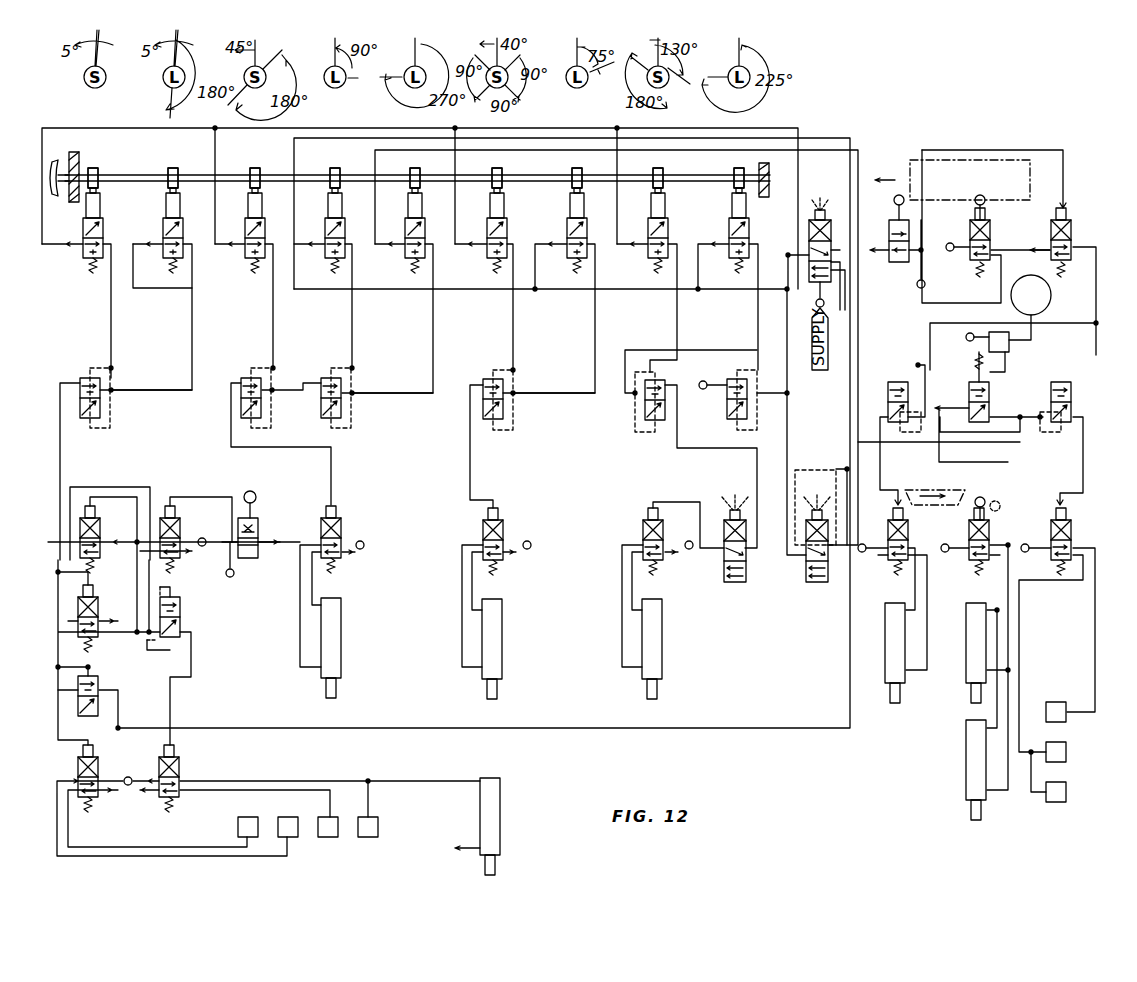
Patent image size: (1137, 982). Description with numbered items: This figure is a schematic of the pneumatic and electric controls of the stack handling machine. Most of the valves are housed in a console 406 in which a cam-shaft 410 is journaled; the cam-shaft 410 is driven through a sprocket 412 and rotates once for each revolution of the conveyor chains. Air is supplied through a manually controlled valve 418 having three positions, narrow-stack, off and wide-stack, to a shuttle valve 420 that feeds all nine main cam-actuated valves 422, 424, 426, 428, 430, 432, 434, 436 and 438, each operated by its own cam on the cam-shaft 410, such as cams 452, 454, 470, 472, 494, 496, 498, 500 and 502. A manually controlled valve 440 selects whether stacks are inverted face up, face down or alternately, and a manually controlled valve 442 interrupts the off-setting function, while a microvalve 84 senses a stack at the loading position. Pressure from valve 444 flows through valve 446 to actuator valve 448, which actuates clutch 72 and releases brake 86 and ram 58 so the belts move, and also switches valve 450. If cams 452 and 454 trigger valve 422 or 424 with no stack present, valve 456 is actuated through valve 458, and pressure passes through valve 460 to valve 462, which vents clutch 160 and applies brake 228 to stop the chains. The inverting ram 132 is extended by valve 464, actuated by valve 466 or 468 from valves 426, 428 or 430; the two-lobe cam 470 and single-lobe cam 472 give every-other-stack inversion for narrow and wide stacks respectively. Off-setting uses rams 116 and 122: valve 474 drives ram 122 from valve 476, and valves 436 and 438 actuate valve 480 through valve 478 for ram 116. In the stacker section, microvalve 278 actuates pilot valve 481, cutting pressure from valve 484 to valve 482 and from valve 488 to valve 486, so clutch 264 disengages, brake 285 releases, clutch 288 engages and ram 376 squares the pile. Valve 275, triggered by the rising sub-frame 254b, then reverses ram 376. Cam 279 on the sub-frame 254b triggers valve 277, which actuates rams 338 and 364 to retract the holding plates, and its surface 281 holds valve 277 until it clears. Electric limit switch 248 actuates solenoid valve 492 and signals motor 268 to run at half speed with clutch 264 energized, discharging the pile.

The cam-shaft 410 is at (100, 182).
The sprocket 412 is at (52, 164).
The console 406 is at (78, 158).
The main cam-actuated valve 422 is at (83, 258).
The main cam-actuated valve 424 is at (177, 256).
The main cam-actuated valve 426 is at (247, 258).
The main cam-actuated valve 428 is at (329, 258).
The main cam-actuated valve 430 is at (408, 260).
The main cam-actuated valve 432 is at (490, 260).
The main cam-actuated valve 434 is at (574, 262).
The main cam-actuated valve 436 is at (653, 260).
The main cam-actuated valve 438 is at (748, 260).
The cam 452 is at (95, 168).
The cam 454 is at (172, 168).
The cam 470 is at (255, 168).
The cam 472 is at (335, 168).
The cam 494 is at (415, 168).
The cam 496 is at (497, 168).
The cam 498 is at (577, 168).
The cam 500 is at (658, 168).
The cam 502 is at (739, 168).
The manually controlled valve 418 is at (816, 281).
The valve 458 is at (86, 374).
The valve 466 is at (249, 374).
The valve 468 is at (331, 366).
The valve 476 is at (492, 371).
The valve 478 is at (660, 422).
The shuttle valve 420 is at (728, 406).
The valve 450 is at (97, 524).
The valve 444 is at (177, 524).
The microvalve 84 is at (256, 562).
The valve 464 is at (342, 526).
The valve 474 is at (503, 525).
The valve 480 is at (644, 532).
The manually controlled valve 442 is at (724, 582).
The manually controlled valve 440 is at (814, 582).
The inverting ram 132 is at (342, 642).
The ram 122 is at (502, 644).
The ram 116 is at (662, 644).
The valve 456 is at (96, 640).
The valve 446 is at (181, 620).
The valve 460 is at (101, 682).
The valve 462 is at (120, 760).
The actuator valve 448 is at (180, 772).
The brake 228 is at (238, 826).
The clutch 160 is at (288, 817).
The clutch 72 is at (326, 837).
The brake 86 is at (378, 824).
The ram 58 is at (496, 814).
The sub-frame 254b is at (1000, 182).
The microvalve 278 is at (902, 262).
The valve 275 is at (971, 262).
The pilot valve 481 is at (1073, 232).
The motor 268 is at (1044, 304).
The electric limit switch 248 is at (989, 343).
The valve 488 is at (894, 390).
The solenoid valve 492 is at (978, 425).
The valve 484 is at (1073, 404).
The cam 279 is at (946, 490).
The cam surface 281 is at (918, 506).
The valve 486 is at (894, 568).
The valve 277 is at (983, 568).
The valve 482 is at (1052, 522).
The ram 376 is at (888, 690).
The ram 338 is at (967, 676).
The ram 364 is at (964, 746).
The clutch 288 is at (1056, 722).
The clutch 264 is at (1066, 748).
The brake 285 is at (1066, 800).